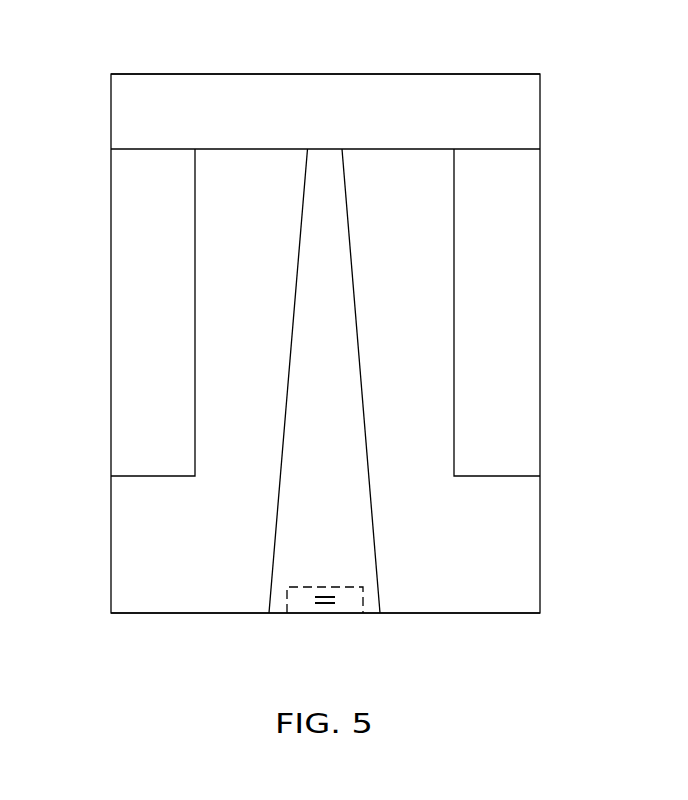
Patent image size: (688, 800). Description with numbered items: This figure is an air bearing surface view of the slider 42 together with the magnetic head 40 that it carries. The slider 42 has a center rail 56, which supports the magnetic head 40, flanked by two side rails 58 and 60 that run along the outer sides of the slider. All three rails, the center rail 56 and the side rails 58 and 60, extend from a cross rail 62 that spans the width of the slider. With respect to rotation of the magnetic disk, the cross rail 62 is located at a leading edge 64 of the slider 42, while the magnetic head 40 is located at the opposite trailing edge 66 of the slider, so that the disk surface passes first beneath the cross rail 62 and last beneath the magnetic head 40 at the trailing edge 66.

The magnetic head 40 is at (303, 607).
The slider 42 is at (108, 563).
The center rail 56 is at (310, 259).
The side rail 58 is at (125, 227).
The side rail 60 is at (523, 228).
The cross rail 62 is at (247, 86).
The leading edge 64 is at (422, 75).
The trailing edge 66 is at (441, 613).